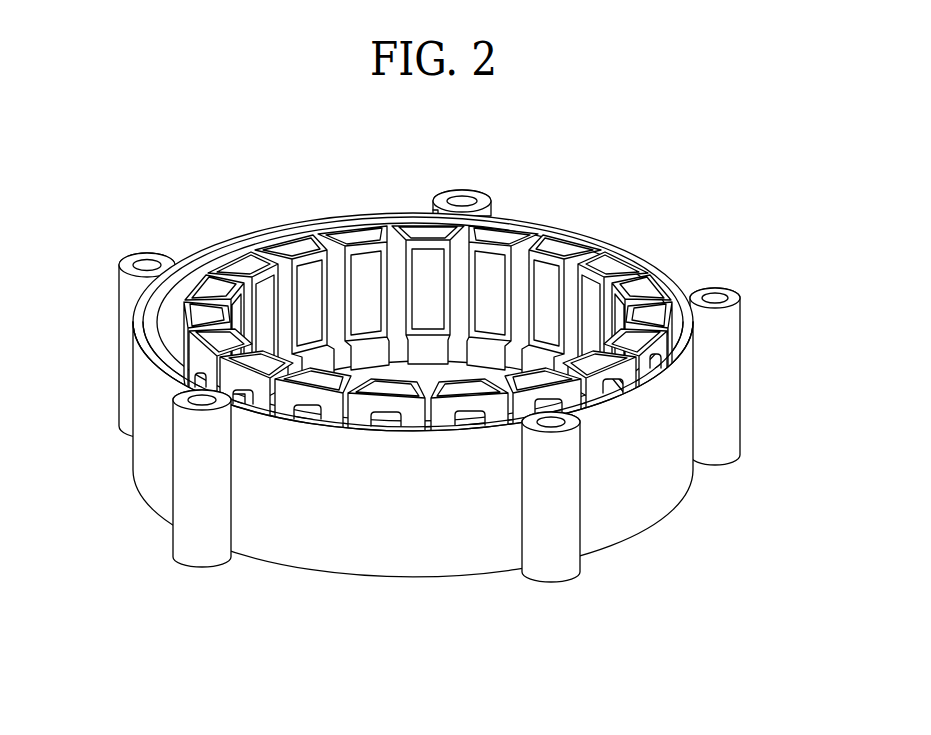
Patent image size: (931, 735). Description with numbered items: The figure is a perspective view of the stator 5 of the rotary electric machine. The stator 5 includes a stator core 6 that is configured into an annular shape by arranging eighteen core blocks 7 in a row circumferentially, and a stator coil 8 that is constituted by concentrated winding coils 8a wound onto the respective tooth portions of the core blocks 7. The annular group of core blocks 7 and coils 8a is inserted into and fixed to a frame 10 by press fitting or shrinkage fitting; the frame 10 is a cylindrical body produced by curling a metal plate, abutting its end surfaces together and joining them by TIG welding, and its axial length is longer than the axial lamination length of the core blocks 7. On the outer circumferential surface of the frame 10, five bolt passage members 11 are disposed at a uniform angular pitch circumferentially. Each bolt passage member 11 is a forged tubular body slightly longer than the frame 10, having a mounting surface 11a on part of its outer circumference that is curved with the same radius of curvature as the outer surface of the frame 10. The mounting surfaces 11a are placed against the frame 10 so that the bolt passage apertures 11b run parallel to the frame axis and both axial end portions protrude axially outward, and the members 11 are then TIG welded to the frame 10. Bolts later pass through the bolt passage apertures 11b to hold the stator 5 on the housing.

The stator 5 is at (127, 149).
The stator core 6 is at (660, 305).
The core block 7 is at (163, 314).
The stator coil 8 is at (606, 246).
The concentrated winding coil 8a is at (278, 232).
The frame 10 is at (148, 455).
The bolt passage member 11 is at (480, 186).
The mounting surface 11a is at (433, 210).
The bolt passage aperture 11b is at (448, 194).